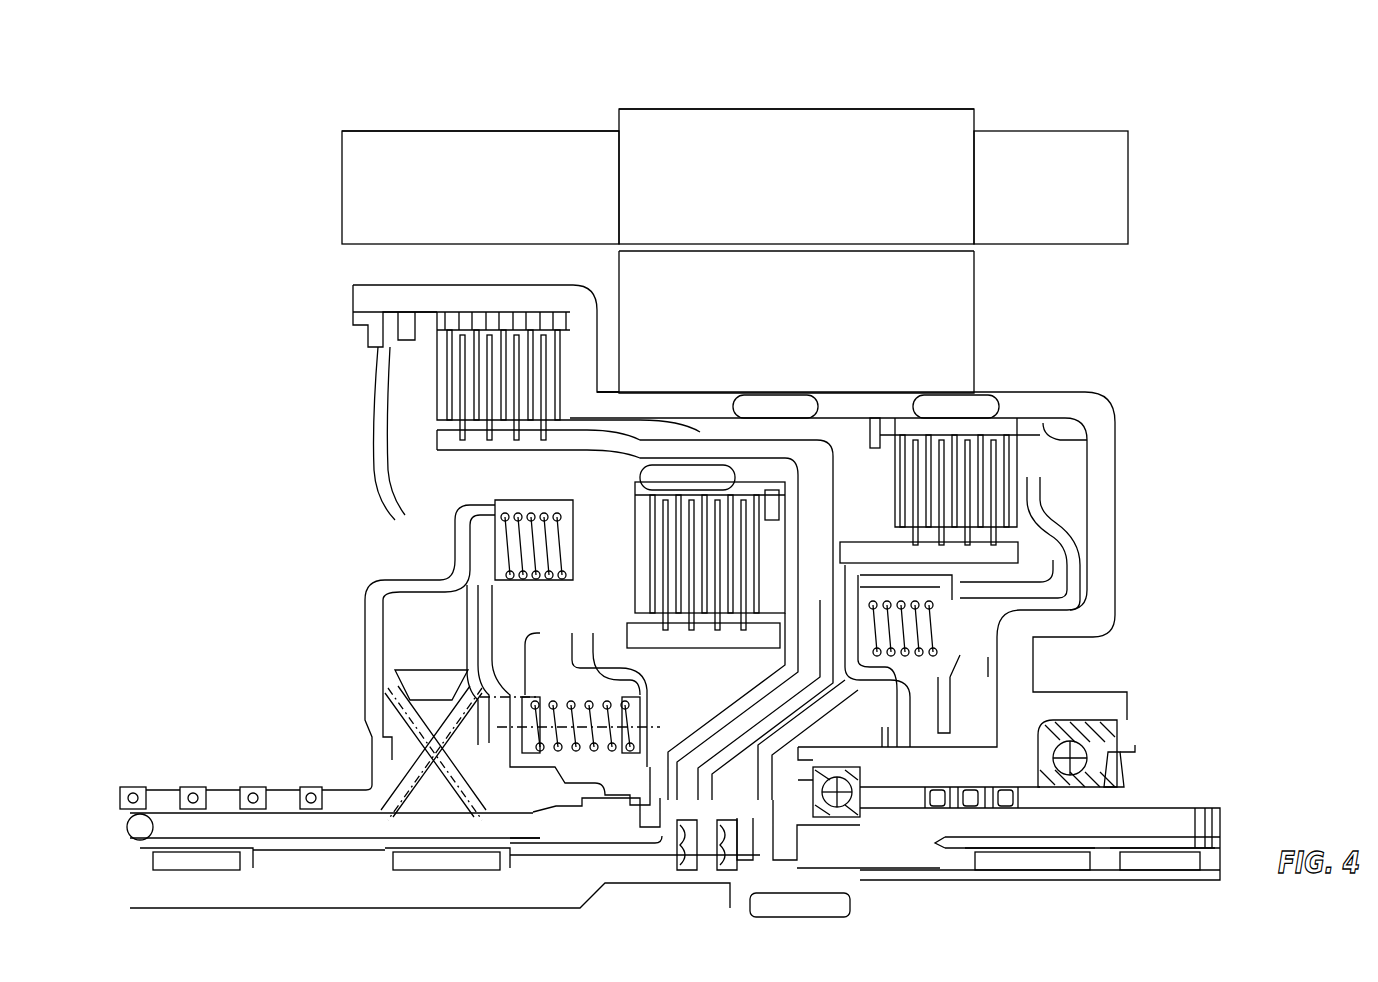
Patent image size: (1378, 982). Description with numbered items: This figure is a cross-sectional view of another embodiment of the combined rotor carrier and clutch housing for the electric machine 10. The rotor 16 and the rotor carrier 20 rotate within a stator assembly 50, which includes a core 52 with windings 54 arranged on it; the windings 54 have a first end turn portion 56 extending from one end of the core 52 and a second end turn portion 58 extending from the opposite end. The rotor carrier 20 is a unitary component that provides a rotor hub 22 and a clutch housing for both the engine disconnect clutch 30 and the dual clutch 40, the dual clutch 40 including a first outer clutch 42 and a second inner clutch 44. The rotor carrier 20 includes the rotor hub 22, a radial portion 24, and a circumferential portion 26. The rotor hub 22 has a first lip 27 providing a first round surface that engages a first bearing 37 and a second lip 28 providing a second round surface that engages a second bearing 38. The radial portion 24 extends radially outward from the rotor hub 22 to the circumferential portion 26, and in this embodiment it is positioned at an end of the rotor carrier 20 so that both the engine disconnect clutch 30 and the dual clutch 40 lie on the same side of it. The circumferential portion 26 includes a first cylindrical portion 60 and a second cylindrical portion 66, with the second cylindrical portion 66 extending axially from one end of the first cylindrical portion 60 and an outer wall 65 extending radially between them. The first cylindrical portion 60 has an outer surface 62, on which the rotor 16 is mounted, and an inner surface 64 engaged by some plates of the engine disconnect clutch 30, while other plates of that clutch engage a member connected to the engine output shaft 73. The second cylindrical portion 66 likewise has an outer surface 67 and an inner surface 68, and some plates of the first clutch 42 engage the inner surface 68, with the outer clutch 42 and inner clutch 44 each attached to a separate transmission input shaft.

The electric machine 10 is at (1144, 97).
The rotor 16 is at (935, 320).
The rotor carrier 20 is at (1100, 413).
The rotor hub 22 is at (968, 768).
The radial portion 24 is at (1100, 545).
The circumferential portion 26 is at (860, 400).
The first lip 27 is at (1127, 708).
The second lip 28 is at (797, 750).
The engine disconnect clutch 30 is at (1010, 462).
The first bearing 37 is at (1098, 797).
The second bearing 38 is at (838, 815).
The dual clutch 40 is at (255, 448).
The first clutch 42 is at (468, 380).
The second clutch 44 is at (668, 550).
The stator assembly 50 is at (864, 100).
The core 52 is at (795, 143).
The windings 54 is at (473, 158).
The first end turn portion 56 is at (1098, 190).
The second end turn portion 58 is at (352, 182).
The first cylindrical portion 60 is at (767, 402).
The outer surface 62 is at (1028, 390).
The inner surface 64 is at (1043, 423).
The outer wall 65 is at (600, 337).
The second cylindrical portion 66 is at (355, 303).
The outer surface 67 is at (398, 286).
The inner surface 68 is at (428, 322).
The engine output shaft 73 is at (767, 878).